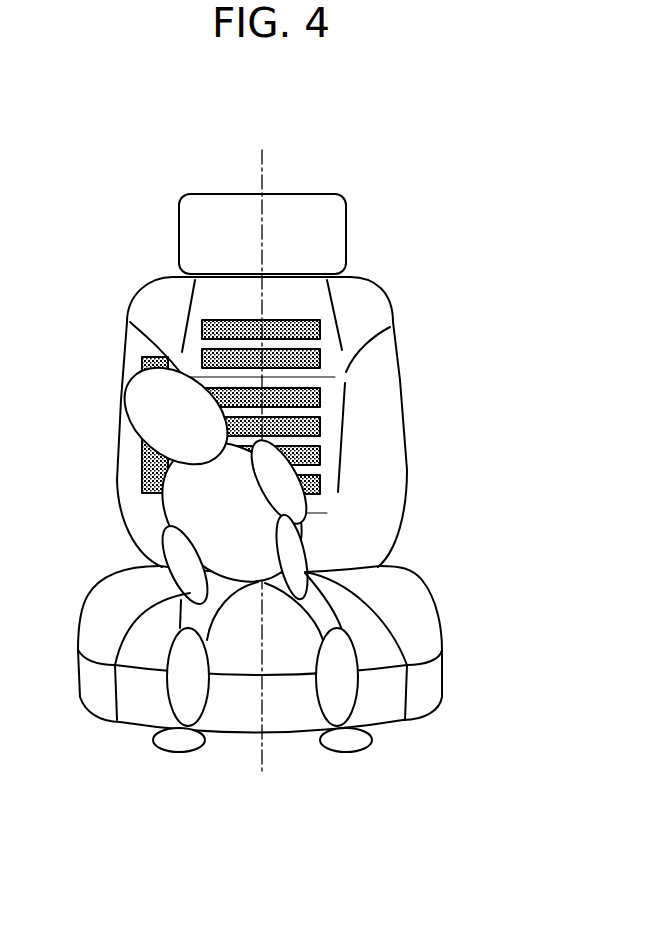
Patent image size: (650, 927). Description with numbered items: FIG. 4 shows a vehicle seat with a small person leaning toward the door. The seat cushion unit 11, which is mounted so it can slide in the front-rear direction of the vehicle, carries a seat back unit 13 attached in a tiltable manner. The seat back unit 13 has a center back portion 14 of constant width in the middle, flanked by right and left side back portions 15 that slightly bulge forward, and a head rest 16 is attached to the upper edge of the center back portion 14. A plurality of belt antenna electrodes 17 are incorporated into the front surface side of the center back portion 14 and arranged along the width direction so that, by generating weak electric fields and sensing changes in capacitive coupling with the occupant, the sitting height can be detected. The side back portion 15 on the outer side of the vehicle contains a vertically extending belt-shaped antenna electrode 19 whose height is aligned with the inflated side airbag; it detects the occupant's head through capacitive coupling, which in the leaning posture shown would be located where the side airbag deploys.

The seat cushion unit 11 is at (448, 584).
The seat back unit 13 is at (396, 287).
The center back portion 14 is at (232, 297).
The side back portions 15 is at (162, 293).
The head rest 16 is at (318, 206).
The belt antenna electrodes 17 is at (322, 482).
The antenna electrode 19 is at (145, 357).